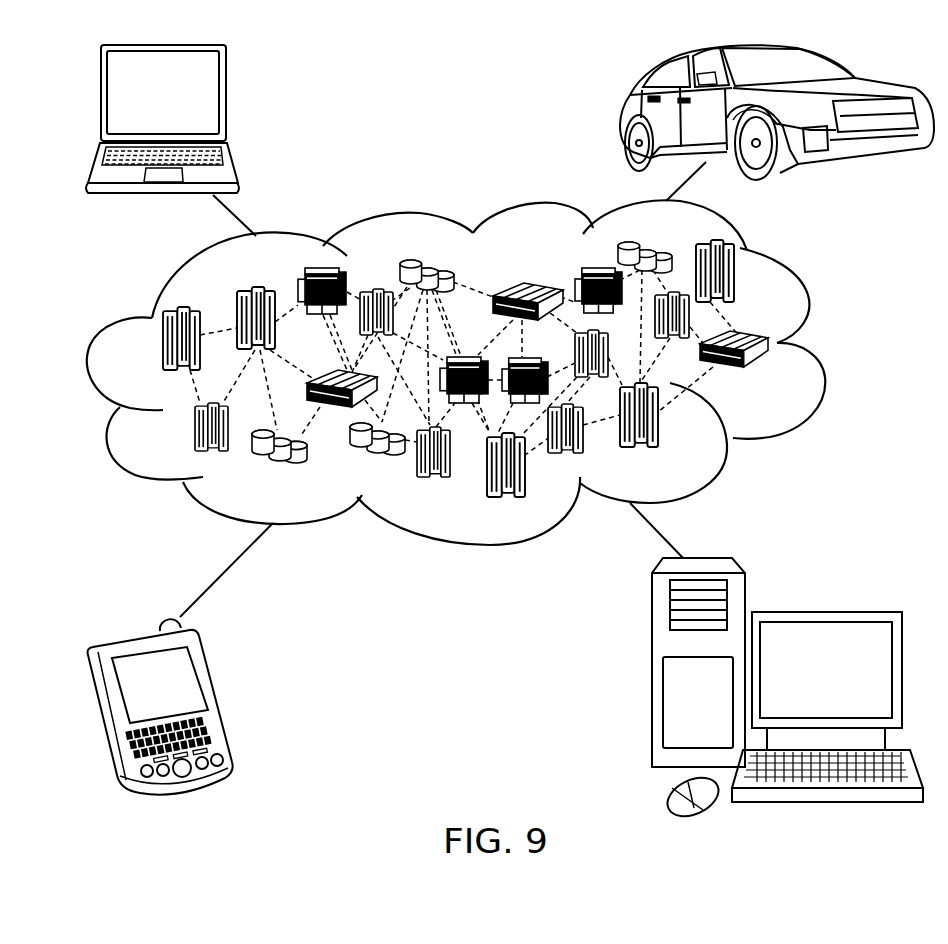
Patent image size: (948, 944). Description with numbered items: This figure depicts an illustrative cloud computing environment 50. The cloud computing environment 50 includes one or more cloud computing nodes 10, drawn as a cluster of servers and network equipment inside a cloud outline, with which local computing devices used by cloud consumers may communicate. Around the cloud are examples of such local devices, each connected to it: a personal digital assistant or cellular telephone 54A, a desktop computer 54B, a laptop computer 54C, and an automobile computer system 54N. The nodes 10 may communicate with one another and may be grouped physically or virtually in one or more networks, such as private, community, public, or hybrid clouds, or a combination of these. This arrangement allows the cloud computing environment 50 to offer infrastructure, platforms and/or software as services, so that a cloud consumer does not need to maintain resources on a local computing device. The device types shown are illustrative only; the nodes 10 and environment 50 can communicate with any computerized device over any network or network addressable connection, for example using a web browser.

The cloud computing node 10 is at (776, 377).
The cloud computing environment 50 is at (823, 349).
The personal digital assistant or cellular telephone 54A is at (215, 699).
The desktop computer 54B is at (823, 612).
The laptop computer 54C is at (226, 98).
The automobile computer system 54N is at (622, 112).